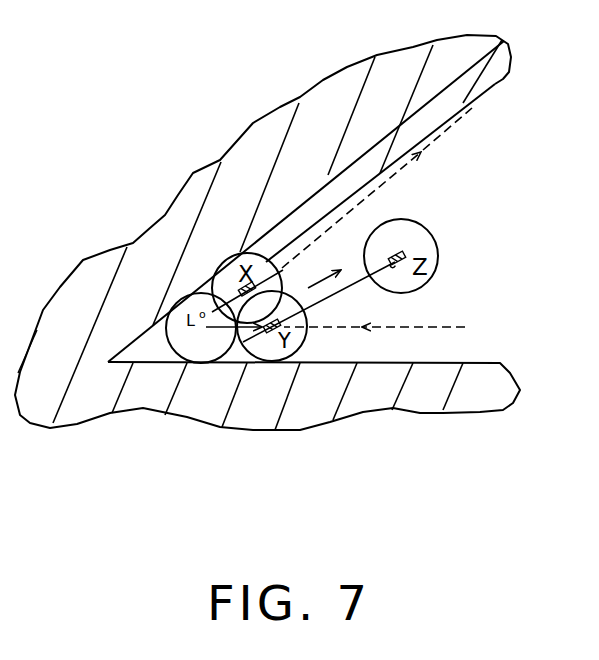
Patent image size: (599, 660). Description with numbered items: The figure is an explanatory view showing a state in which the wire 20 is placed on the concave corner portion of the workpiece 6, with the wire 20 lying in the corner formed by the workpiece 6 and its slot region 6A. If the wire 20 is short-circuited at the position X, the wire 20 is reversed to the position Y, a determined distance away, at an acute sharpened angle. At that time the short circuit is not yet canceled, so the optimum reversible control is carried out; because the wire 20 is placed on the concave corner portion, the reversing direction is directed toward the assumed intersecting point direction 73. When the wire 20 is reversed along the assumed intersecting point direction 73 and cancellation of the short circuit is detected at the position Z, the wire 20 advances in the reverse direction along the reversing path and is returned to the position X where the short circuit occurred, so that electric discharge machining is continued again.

The body 6 is at (256, 124).
The lip of body 6A is at (495, 84).
The wire 20 is at (185, 294).
The assumed intersecting point direction 73 is at (306, 290).